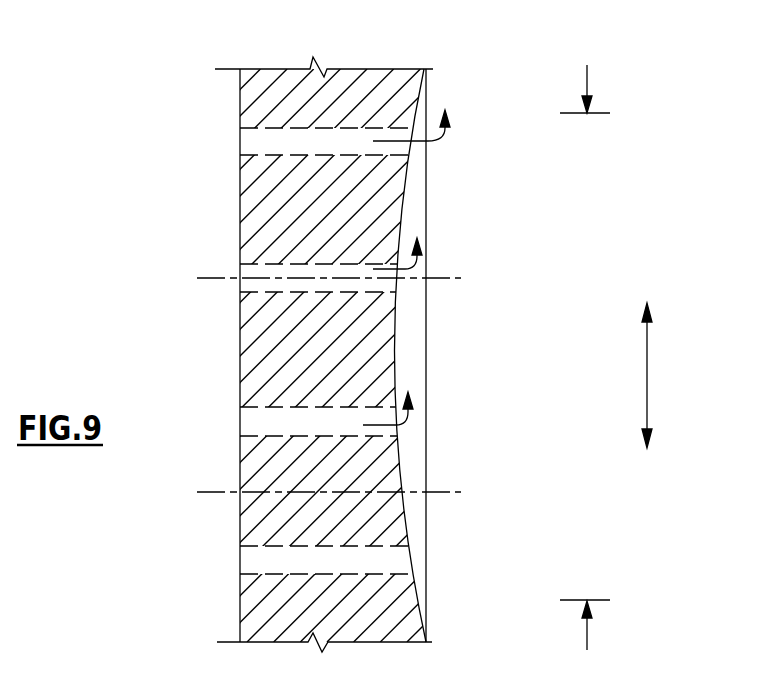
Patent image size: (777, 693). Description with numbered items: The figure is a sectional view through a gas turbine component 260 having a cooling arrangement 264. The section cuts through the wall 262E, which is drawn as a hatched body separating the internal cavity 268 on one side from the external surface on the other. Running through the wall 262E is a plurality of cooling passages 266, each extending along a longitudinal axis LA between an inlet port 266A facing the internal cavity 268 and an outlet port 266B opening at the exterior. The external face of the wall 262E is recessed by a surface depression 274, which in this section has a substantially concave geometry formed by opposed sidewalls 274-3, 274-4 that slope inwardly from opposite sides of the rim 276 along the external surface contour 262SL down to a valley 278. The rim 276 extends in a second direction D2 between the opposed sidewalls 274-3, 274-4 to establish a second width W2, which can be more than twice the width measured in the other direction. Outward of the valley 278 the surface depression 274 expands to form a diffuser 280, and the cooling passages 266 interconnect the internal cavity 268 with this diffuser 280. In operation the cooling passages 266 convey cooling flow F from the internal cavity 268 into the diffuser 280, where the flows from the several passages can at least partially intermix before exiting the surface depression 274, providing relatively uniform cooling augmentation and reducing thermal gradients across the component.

The gas turbine component 260 is at (260, 43).
The cooling arrangement 264 is at (220, 61).
The second side of wall / leading portion 262SL is at (423, 93).
The wall 262E is at (427, 628).
The cooling passages 266 is at (275, 294).
The inlet port 266A is at (242, 550).
The outlet port 266B is at (412, 557).
The internal cavity 268 is at (183, 427).
The surface depression 274 is at (474, 358).
The sidewall 274-4 is at (423, 201).
The sidewall 274-3 is at (407, 524).
The rim 276 is at (416, 594).
The valley 278 is at (397, 366).
The diffuser 280 is at (495, 312).
The longitudinal axis LA is at (210, 278).
The cooling flow F is at (410, 419).
The second direction D2 is at (647, 367).
The second width W2 is at (587, 630).